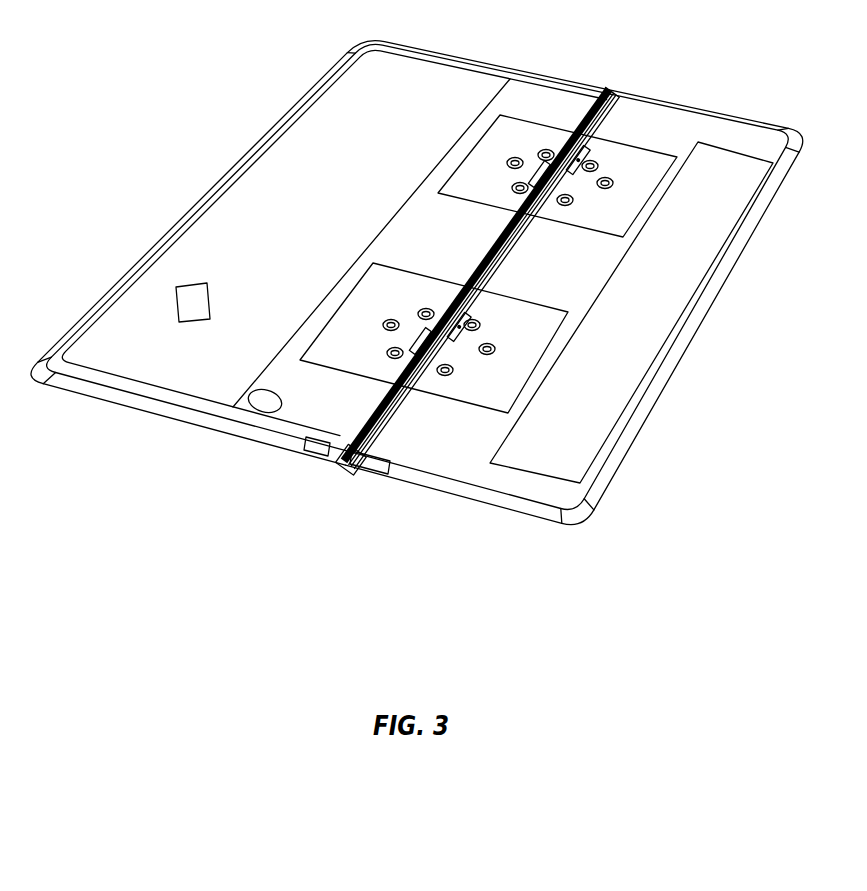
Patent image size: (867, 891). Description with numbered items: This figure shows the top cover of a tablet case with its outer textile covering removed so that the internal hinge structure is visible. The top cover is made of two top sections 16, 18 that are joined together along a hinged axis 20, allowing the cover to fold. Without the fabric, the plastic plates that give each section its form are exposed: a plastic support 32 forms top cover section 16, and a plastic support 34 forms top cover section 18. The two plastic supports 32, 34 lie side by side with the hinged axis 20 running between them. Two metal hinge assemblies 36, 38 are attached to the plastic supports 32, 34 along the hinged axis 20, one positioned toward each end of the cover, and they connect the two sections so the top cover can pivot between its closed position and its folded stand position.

The top section 16 is at (466, 84).
The top section 18 is at (683, 133).
The hinged axis 20 is at (614, 92).
The plastic support 32 is at (289, 156).
The plastic support 34 is at (590, 277).
The metal hinge assembly 36 is at (554, 116).
The metal hinge assembly 38 is at (344, 382).